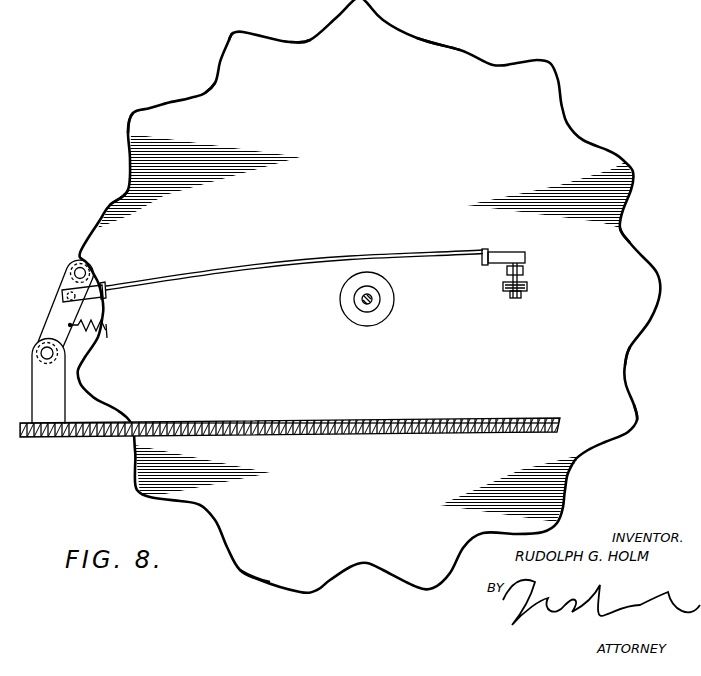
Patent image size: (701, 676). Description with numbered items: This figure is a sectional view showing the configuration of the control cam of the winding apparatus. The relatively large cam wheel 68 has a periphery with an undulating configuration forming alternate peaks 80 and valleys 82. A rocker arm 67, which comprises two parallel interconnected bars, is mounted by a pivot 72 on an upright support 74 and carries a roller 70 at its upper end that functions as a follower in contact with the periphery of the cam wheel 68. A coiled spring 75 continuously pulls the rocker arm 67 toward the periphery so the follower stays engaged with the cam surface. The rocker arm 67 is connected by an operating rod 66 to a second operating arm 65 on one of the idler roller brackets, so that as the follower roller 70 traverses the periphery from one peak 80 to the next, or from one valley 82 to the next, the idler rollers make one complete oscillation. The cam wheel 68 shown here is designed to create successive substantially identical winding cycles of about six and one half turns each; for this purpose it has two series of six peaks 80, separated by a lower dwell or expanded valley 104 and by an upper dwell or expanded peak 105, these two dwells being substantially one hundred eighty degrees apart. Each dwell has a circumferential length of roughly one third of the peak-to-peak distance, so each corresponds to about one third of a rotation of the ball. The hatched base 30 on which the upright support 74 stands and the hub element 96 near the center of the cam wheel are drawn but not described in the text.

The cam wheel 68 is at (572, 119).
The peaks 80 is at (233, 32).
The valleys 82 is at (307, 40).
The lower dwell or expanded valley 104 is at (460, 50).
The upper dwell or expanded peak 105 is at (267, 582).
The base plate 30 is at (92, 440).
The upright support 74 is at (40, 383).
The pivot 72 is at (43, 350).
The rocker arm 67 is at (53, 315).
The roller 70 is at (67, 263).
The operating rod 66 is at (338, 258).
The second operating arm 65 is at (530, 287).
The roller 96 is at (364, 305).
The coiled spring 75 is at (107, 330).